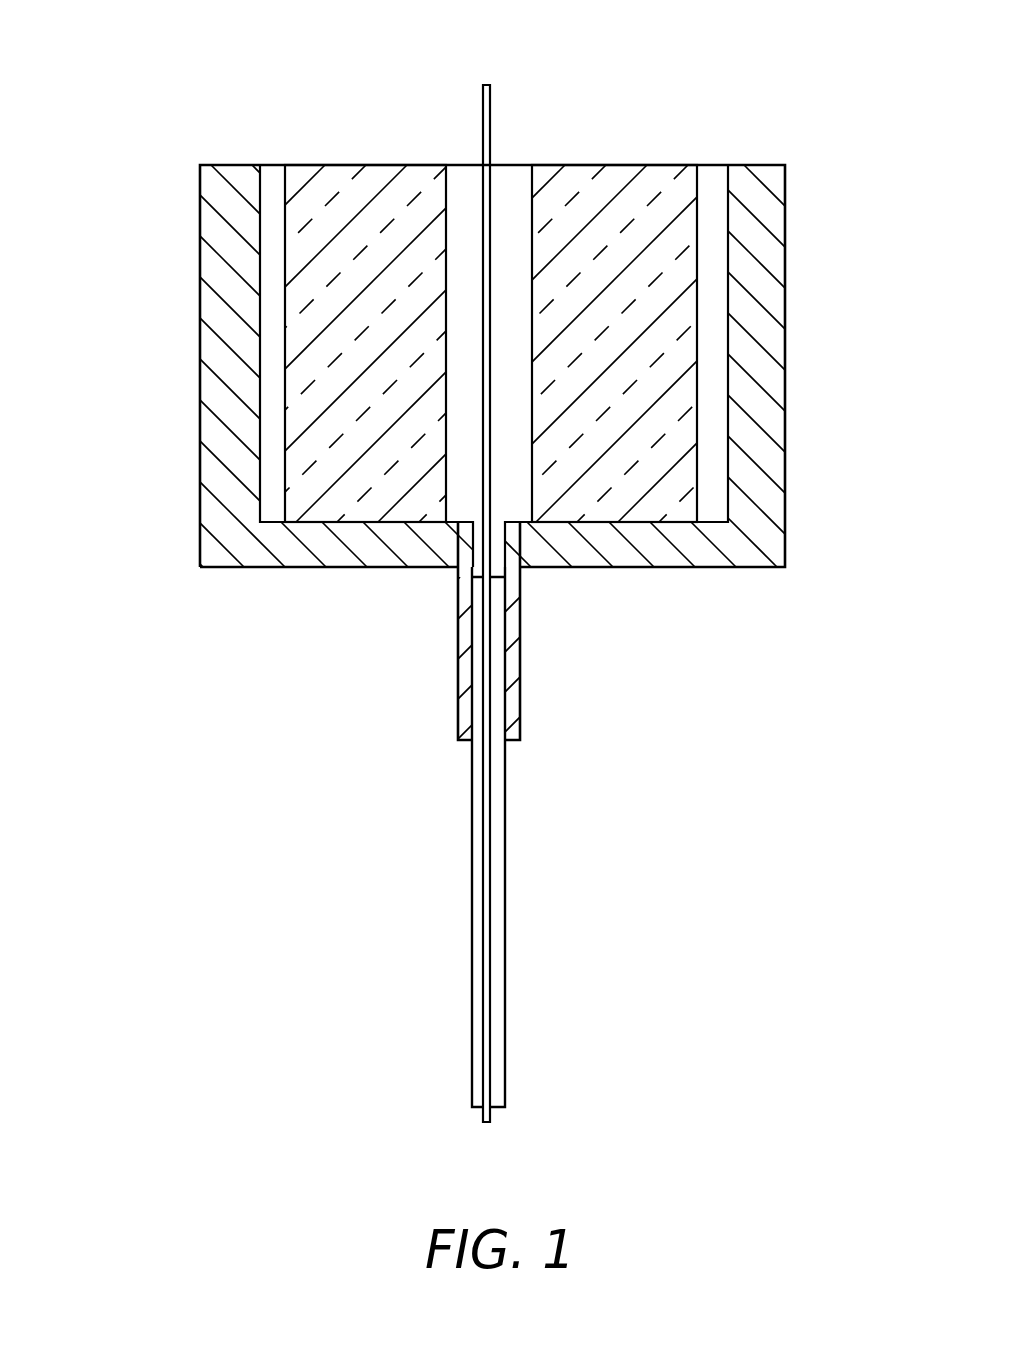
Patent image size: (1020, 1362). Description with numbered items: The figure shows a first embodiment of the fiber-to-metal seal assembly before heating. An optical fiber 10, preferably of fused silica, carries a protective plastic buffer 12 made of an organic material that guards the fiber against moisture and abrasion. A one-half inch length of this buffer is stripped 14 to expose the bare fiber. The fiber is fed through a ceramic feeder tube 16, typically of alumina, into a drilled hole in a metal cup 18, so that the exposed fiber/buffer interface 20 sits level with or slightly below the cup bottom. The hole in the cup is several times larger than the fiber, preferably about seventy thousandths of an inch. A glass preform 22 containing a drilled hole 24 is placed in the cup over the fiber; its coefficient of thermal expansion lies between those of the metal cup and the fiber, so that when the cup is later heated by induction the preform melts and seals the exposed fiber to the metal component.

The optical fiber 10 is at (535, 1116).
The protective plastic buffer 12 is at (508, 935).
The stripped length of buffer 14 is at (482, 100).
The ceramic feeder tube 16 is at (521, 668).
The metal cup 18 is at (200, 210).
The fiber/buffer interface 20 is at (530, 581).
The glass preform 22 is at (662, 175).
The drilled hole 24 is at (513, 175).